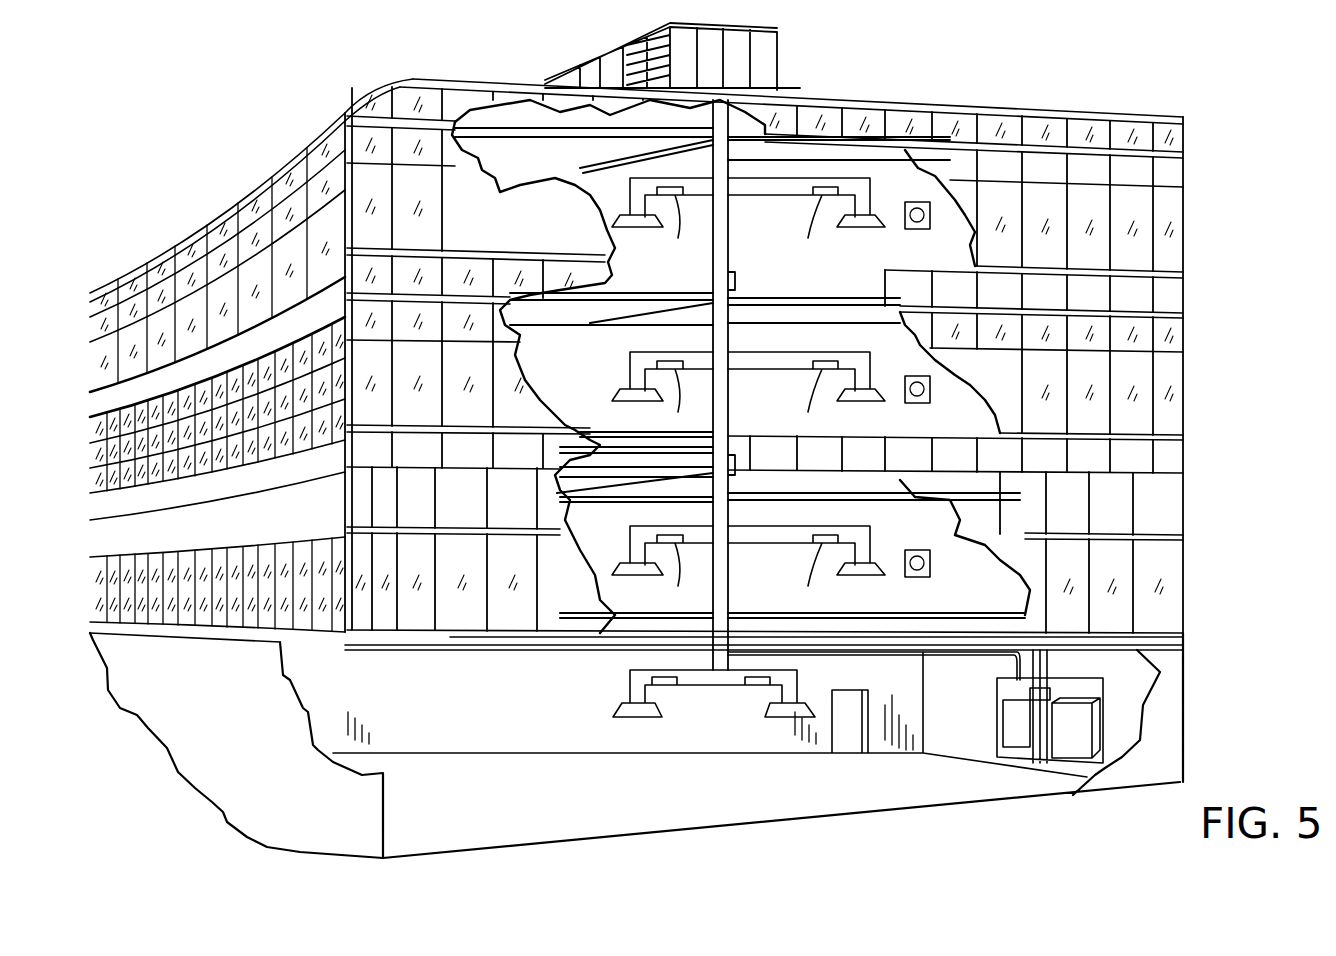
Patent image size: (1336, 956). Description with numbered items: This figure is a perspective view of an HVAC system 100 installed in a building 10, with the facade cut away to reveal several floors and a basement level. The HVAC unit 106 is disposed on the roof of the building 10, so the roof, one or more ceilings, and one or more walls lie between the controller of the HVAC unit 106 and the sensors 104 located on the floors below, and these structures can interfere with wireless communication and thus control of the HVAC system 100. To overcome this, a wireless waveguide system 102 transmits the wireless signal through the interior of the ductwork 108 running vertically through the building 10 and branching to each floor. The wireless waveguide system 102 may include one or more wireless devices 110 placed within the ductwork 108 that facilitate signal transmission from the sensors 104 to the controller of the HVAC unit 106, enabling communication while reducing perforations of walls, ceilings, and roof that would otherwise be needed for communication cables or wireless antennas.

The building 10 is at (1046, 105).
The HVAC system 100 is at (888, 52).
The wireless waveguide system 102 is at (895, 730).
The sensors 104 is at (917, 229).
The HVAC unit 106 is at (507, 35).
The ductwork 108 is at (728, 222).
The wireless devices 110 is at (680, 232).